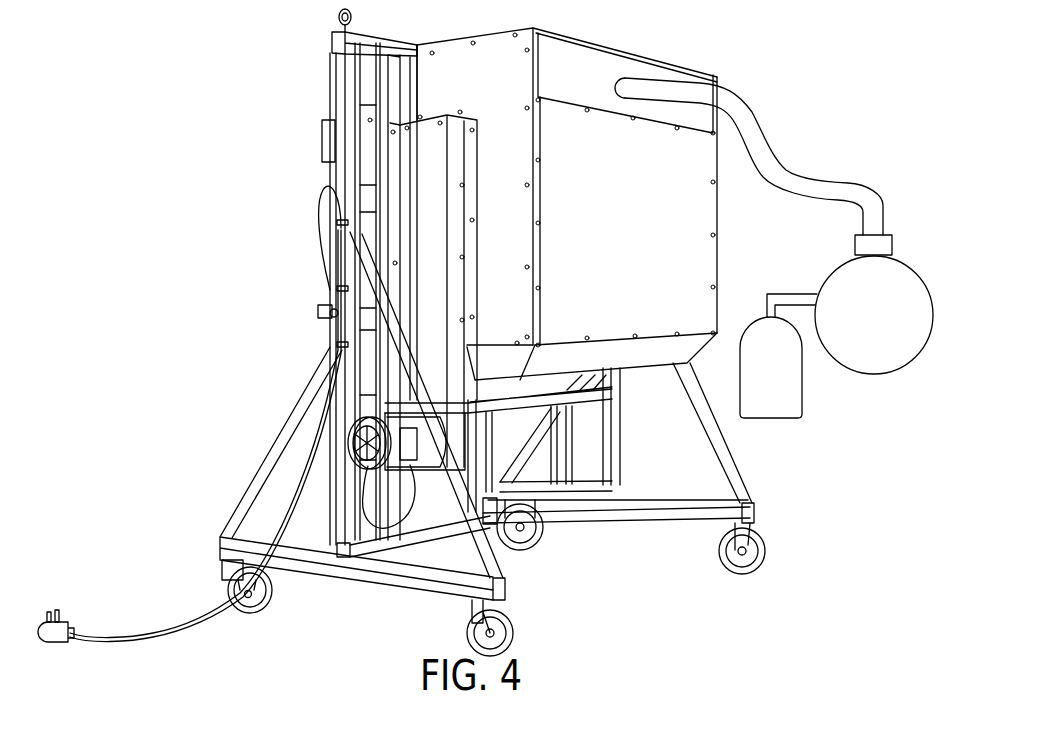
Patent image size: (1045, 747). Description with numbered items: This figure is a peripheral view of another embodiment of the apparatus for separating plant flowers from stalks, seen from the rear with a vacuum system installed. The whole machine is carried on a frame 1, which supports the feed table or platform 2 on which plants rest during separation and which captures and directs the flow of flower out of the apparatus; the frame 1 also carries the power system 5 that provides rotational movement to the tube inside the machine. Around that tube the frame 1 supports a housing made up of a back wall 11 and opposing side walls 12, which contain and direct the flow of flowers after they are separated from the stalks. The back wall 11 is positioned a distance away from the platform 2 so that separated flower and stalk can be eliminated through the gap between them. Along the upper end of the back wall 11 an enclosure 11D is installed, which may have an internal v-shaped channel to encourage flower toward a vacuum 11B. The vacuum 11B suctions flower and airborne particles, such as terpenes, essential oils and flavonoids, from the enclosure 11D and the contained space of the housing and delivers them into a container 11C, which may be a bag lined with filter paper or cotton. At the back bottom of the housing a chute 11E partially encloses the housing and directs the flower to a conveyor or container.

The frame 1 is at (333, 563).
The feed table or platform 2 is at (318, 309).
The power system 5 is at (362, 442).
The back wall 11 is at (705, 202).
The vacuum 11B is at (880, 297).
The container 11C is at (760, 403).
The enclosure 11D is at (573, 43).
The chute 11E is at (682, 353).
The side walls 12 is at (452, 68).